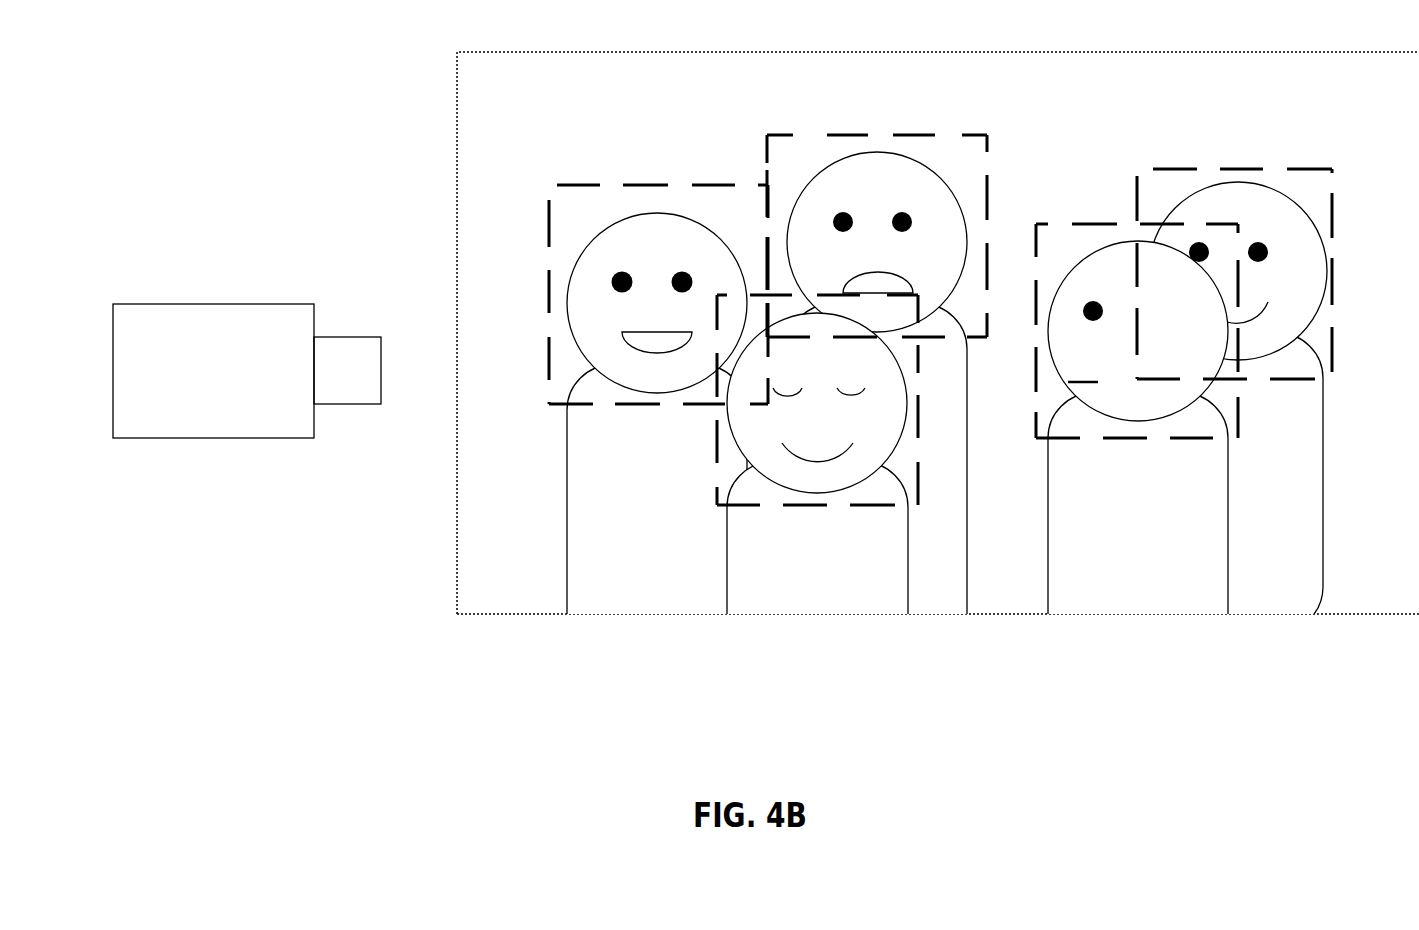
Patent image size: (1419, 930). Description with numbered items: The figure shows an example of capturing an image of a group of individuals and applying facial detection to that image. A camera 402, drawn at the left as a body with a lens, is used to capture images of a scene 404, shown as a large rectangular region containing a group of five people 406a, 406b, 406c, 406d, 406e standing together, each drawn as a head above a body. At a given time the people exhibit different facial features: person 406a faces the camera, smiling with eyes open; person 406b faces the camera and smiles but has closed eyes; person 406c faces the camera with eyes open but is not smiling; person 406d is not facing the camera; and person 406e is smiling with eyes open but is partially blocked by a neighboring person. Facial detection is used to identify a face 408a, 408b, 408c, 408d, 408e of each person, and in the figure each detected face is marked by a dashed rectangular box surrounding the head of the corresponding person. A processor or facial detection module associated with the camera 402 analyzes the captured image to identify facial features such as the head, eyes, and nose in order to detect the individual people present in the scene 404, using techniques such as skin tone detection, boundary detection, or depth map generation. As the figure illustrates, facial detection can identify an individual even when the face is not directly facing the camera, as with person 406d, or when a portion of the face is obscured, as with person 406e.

The camera 402 is at (213, 303).
The scene 404 is at (517, 52).
The person 406a is at (610, 598).
The person 406b is at (755, 585).
The person 406c is at (937, 600).
The person 406d is at (1113, 598).
The person 406e is at (1285, 600).
The face 408a is at (580, 263).
The face 408b is at (787, 317).
The face 408c is at (827, 173).
The face 408d is at (1083, 262).
The face 408e is at (1195, 190).